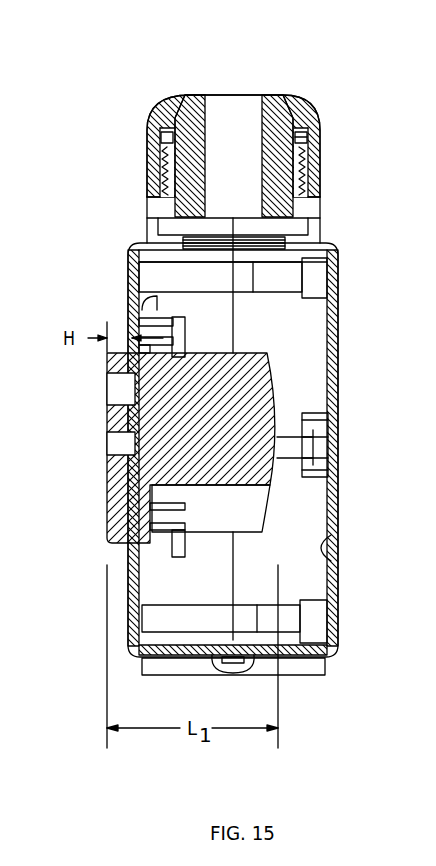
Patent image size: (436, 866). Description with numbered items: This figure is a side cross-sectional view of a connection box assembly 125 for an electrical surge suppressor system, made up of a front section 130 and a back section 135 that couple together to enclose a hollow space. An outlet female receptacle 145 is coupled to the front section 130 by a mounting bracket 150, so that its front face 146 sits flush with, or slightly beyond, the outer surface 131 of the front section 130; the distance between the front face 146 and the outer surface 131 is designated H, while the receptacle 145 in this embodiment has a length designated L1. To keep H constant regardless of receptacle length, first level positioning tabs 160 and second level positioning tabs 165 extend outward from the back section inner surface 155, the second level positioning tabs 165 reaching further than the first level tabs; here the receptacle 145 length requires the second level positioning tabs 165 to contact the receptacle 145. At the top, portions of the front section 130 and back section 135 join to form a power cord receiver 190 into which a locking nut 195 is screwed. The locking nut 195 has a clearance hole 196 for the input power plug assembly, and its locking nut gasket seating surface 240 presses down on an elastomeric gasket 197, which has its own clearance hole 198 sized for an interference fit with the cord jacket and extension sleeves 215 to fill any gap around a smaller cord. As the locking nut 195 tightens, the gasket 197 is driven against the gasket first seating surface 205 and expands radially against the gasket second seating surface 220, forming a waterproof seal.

The connection box assembly 125 is at (76, 512).
The front section 130 is at (140, 253).
The outer surface 131 is at (130, 280).
The back section 135 is at (337, 247).
The outlet female receptacle 145 is at (238, 377).
The front face 146 is at (110, 420).
The mounting bracket 150 is at (185, 328).
The back section inner surface 155 is at (332, 560).
The first level positioning tabs 160 is at (315, 412).
The second level positioning tabs 165 is at (315, 433).
The power cord receiver 190 is at (158, 193).
The locking nut 195 is at (157, 119).
The clearance hole 196 is at (185, 95).
The gasket 197 is at (170, 116).
The clearance hole 198 is at (252, 76).
The gasket first seating surface 205 is at (307, 138).
The extension sleeves 215 is at (190, 100).
The gasket second seating surface 220 is at (150, 165).
The locking nut gasket seating surface 240 is at (168, 128).